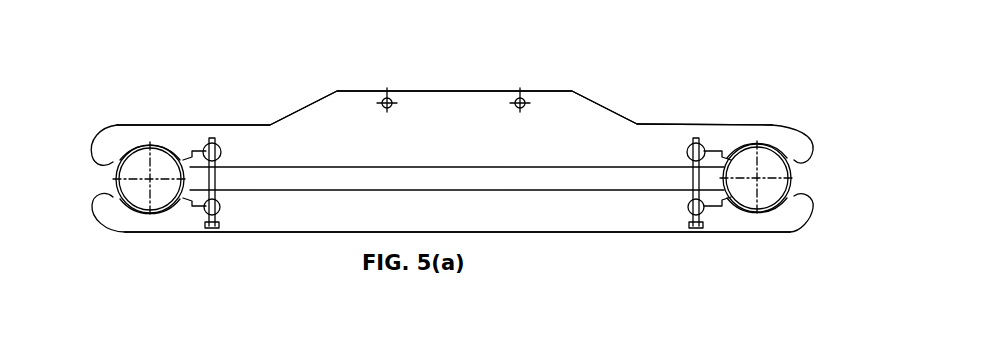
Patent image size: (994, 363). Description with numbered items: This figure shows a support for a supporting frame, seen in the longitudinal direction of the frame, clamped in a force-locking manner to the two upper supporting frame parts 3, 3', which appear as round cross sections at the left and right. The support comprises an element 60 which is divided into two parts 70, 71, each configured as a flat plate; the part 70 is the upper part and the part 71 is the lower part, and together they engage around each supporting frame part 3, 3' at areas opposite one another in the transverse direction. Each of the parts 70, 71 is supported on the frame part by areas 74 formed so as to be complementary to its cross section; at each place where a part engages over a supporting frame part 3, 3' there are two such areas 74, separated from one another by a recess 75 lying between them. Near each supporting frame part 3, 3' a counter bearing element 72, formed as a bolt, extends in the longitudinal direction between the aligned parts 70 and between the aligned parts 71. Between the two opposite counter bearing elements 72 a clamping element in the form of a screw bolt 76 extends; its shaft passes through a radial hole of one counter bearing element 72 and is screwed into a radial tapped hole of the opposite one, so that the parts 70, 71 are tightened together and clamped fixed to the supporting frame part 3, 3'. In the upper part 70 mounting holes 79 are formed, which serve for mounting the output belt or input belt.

The element 60 is at (278, 107).
The part 70 is at (597, 130).
The part 71 is at (583, 212).
The mounting holes 79 is at (387, 97).
The supporting frame part 3 is at (129, 179).
The supporting frame part 3' is at (786, 178).
The recess 75 is at (760, 141).
The areas 74 is at (114, 140).
The counter bearing element 72 is at (223, 152).
The screw bolt 76 is at (217, 185).